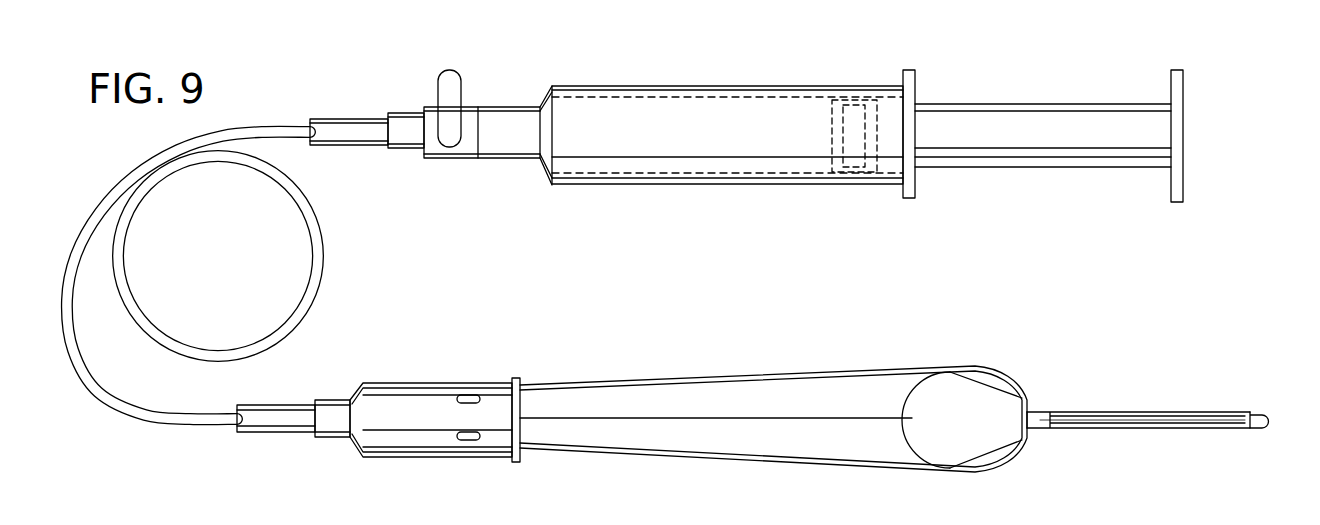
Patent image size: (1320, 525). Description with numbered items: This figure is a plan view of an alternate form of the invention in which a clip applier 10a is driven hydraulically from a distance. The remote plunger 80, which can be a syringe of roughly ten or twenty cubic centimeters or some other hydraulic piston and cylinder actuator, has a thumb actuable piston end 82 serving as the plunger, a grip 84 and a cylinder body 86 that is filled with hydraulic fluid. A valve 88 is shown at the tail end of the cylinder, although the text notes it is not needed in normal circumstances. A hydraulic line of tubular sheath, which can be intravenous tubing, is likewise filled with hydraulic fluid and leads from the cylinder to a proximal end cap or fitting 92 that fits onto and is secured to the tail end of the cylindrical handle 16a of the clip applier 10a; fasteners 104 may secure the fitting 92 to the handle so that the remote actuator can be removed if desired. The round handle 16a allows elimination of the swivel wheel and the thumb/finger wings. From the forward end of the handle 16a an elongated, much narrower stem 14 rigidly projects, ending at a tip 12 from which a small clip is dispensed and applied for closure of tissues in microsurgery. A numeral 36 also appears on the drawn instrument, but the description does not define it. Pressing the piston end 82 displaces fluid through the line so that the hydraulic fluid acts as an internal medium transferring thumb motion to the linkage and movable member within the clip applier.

The remote plunger 80 is at (868, 66).
The thumb actuable piston end 82 is at (1183, 90).
The grip 84 is at (906, 198).
The cylinder body 86 is at (671, 92).
The valve 88 is at (468, 107).
The clip applier 10a is at (753, 415).
The proximal end cap or fitting 92 is at (428, 398).
The fasteners 104 is at (471, 394).
The cylindrical handle 16a is at (805, 445).
The cannula shaft 36 is at (1112, 412).
The stem 14 is at (1228, 430).
The tip 12 is at (1270, 420).